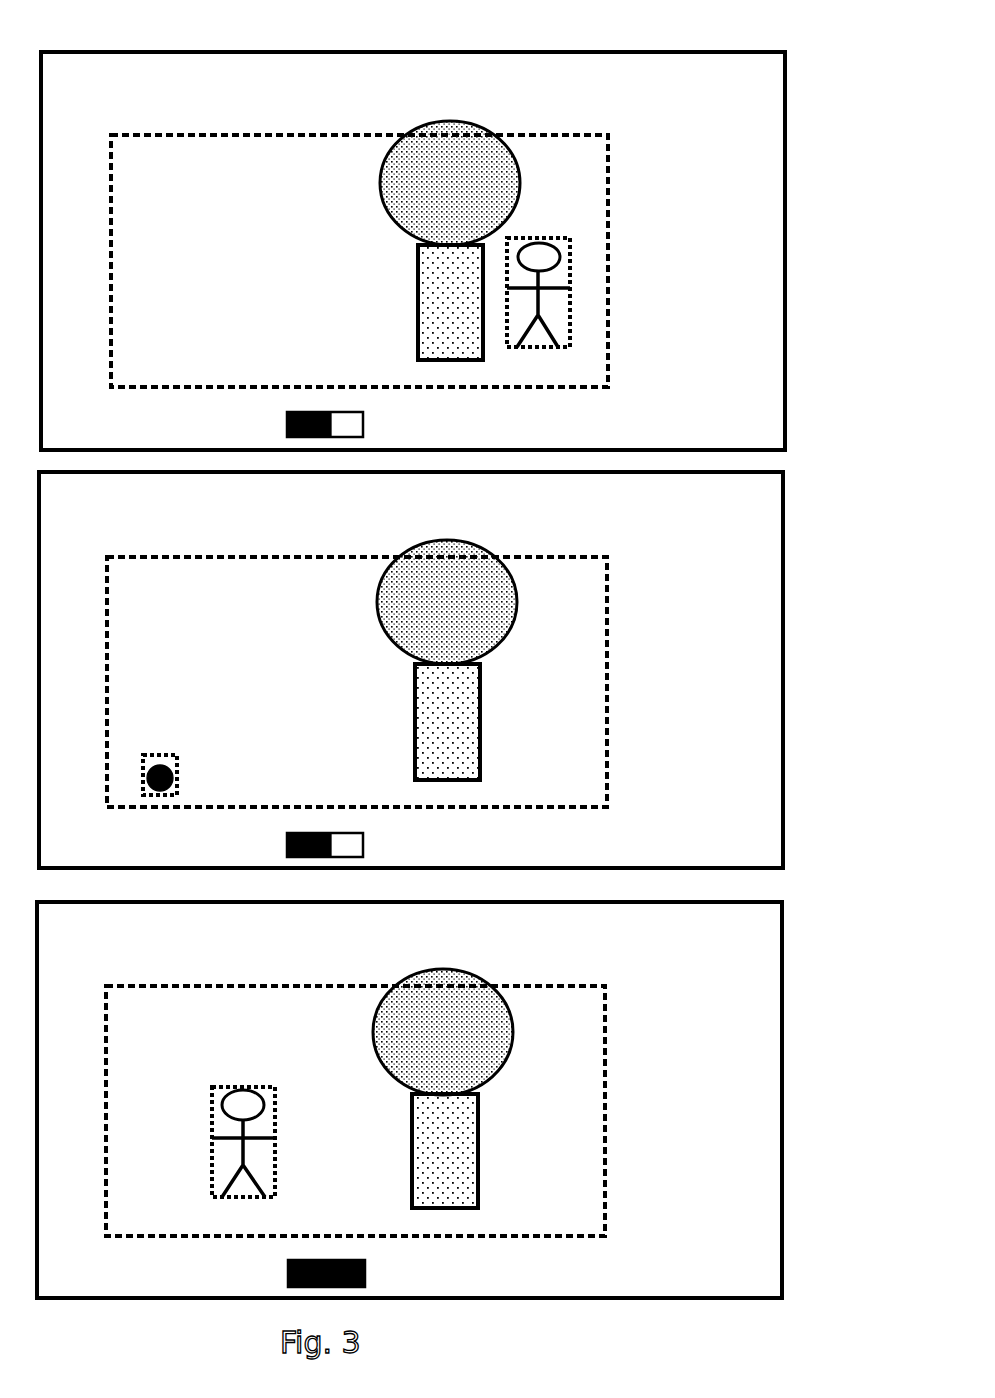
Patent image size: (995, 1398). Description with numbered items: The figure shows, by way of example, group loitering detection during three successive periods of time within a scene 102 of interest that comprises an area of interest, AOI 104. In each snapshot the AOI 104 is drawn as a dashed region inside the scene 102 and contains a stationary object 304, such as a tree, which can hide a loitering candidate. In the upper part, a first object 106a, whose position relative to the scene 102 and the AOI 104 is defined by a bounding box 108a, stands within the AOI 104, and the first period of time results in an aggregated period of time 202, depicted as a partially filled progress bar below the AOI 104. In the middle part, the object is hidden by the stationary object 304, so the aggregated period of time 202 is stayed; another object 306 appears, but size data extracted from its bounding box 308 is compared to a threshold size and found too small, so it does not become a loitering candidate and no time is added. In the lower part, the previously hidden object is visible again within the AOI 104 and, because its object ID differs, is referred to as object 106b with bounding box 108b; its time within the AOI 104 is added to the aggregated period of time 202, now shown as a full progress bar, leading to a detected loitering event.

The scene 102 is at (660, 50).
The area of interest 104 is at (540, 134).
The stationary object 304 is at (382, 200).
The first object 106a is at (545, 238).
The bounding box 108a is at (572, 277).
The aggregated period of time 202 is at (366, 428).
The detected object 306 is at (158, 756).
The bounding box 308 is at (178, 770).
The object 106b is at (250, 1087).
The bounding box 108b is at (277, 1128).